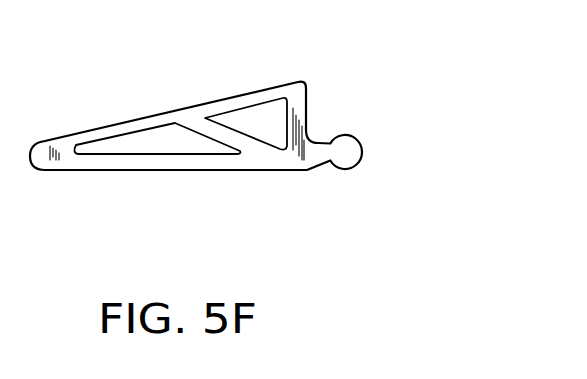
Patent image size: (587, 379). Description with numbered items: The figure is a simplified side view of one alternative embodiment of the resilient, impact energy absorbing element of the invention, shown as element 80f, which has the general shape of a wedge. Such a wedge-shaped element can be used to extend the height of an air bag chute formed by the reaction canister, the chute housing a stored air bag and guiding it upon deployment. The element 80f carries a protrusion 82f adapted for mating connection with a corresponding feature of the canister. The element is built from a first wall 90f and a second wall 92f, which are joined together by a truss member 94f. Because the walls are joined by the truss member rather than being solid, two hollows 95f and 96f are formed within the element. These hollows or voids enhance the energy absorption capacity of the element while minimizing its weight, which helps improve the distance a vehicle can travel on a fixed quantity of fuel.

The resilient impact energy absorbing element 80f is at (170, 98).
The protrusion 82f is at (352, 151).
The first wall 90f is at (123, 162).
The second wall 92f is at (238, 97).
The truss member 94f is at (228, 137).
The hollow 95f is at (113, 152).
The hollow 96f is at (278, 114).